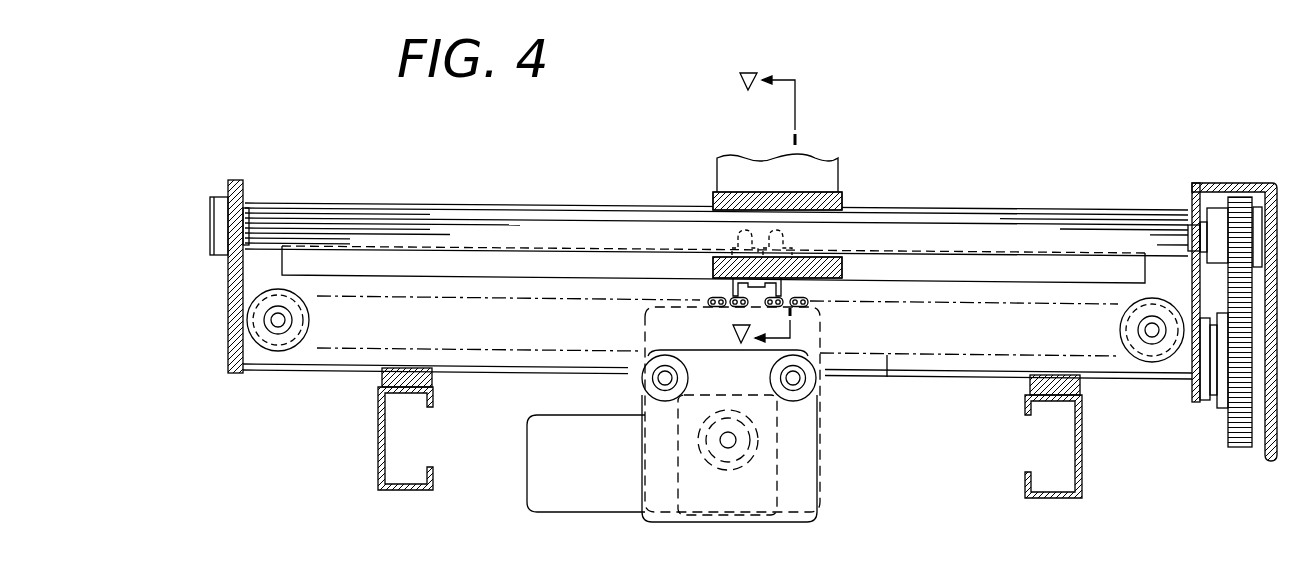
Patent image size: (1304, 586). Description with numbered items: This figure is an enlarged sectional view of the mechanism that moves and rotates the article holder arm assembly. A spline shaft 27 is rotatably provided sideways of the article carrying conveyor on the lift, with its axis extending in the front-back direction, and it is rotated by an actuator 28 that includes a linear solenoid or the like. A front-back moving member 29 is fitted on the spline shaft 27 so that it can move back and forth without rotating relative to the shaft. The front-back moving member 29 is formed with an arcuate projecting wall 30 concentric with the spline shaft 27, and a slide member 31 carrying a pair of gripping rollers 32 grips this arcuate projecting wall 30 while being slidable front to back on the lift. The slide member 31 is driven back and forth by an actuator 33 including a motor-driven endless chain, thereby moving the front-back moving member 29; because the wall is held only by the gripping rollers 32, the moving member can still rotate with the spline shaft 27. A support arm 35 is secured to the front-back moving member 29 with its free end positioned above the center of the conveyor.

The spline shaft 27 is at (398, 203).
The actuator 28 is at (1228, 423).
The front-back moving member 29 is at (820, 192).
The arcuate projecting wall 30 is at (732, 283).
The slide member 31 is at (795, 297).
The gripping rollers 32 is at (773, 240).
The actuator 33 is at (887, 378).
The support arm 35 is at (815, 168).